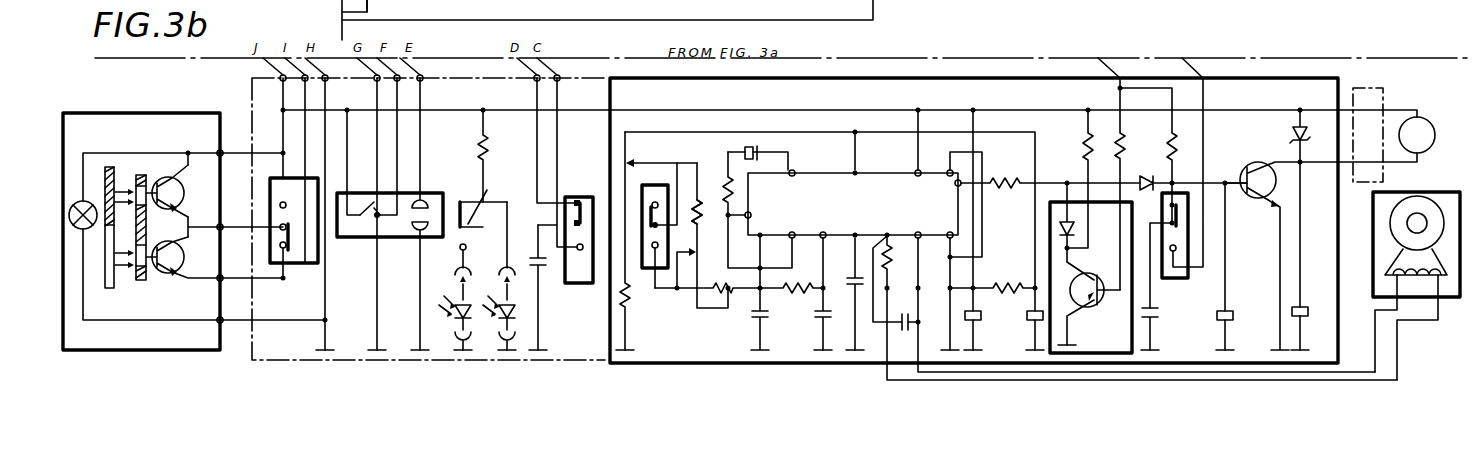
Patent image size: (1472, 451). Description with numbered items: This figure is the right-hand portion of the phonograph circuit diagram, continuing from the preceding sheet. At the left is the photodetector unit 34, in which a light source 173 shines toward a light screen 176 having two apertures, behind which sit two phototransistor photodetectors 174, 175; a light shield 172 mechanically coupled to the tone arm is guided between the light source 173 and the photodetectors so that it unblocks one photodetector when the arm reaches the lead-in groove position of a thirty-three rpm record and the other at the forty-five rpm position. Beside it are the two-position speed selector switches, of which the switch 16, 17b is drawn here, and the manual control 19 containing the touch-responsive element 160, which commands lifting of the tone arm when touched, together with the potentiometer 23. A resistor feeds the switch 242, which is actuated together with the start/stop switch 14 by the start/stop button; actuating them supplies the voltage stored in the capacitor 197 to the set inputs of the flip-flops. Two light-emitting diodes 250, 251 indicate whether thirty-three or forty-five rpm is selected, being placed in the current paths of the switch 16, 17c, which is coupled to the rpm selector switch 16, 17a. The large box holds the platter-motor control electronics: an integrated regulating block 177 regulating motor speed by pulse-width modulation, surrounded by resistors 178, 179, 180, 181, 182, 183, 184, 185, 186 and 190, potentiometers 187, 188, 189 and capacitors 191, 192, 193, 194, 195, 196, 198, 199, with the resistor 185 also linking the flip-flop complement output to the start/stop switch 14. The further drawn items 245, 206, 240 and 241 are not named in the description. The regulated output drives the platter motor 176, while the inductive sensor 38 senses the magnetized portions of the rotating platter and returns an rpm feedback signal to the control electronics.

The photodetector unit 34 is at (210, 112).
The light source 173 is at (78, 202).
The light shield 172 is at (109, 290).
The light screen / platter motor 176 is at (142, 176).
The photodetector 174 is at (200, 196).
The photodetector 175 is at (166, 274).
The selector switch 16 is at (288, 243).
The selector switch contact 17b is at (310, 266).
The rpm selector switch contact 17a is at (660, 184).
The LED switch contact 17c is at (487, 196).
The manual control 19 is at (355, 240).
The potentiometer 23 is at (362, 206).
The touch-responsive element 160 is at (426, 201).
The switch 242 is at (487, 152).
The light-emitting diode 250 is at (458, 324).
The light-emitting diode 251 is at (520, 323).
The component 245 is at (372, 8).
The component 206 is at (1127, 0).
The potentiometer 189 is at (624, 162).
The resistor 186 is at (628, 302).
The potentiometer 187 is at (689, 262).
The potentiometer 188 is at (733, 291).
The resistor 179 is at (704, 210).
The resistor 178 is at (725, 184).
The capacitor 191 is at (760, 154).
The integrated regulating block 177 is at (862, 213).
The resistor 180 is at (812, 282).
The capacitor 192 is at (756, 331).
The capacitor 193 is at (820, 318).
The capacitor 194 is at (880, 332).
The resistor 190 is at (890, 250).
The resistor 181 is at (1010, 186).
The resistor 182 is at (1010, 294).
The capacitor 195 is at (1000, 312).
The capacitor 196 is at (1030, 320).
The resistor 183 is at (1084, 150).
The resistor 184 is at (1125, 150).
The resistor 185 is at (1180, 148).
The zener diode 240 is at (1294, 137).
The transistor 241 is at (1253, 170).
The start/stop switch 14 is at (1179, 277).
The capacitor 197 is at (1155, 318).
The capacitor 198 is at (1233, 312).
The capacitor 199 is at (1305, 307).
The inductive sensor 38 is at (1458, 300).